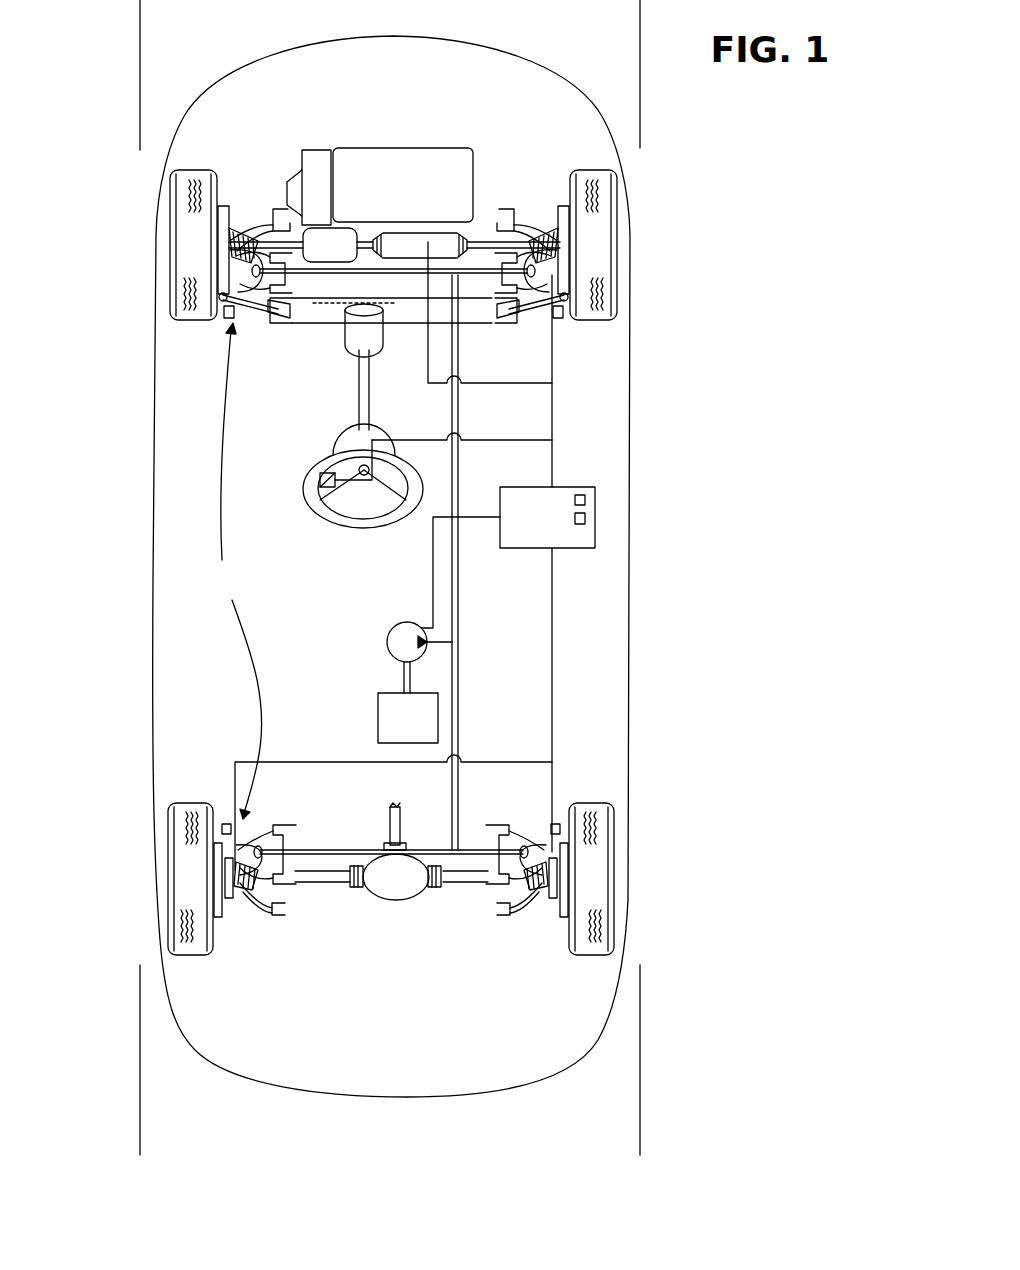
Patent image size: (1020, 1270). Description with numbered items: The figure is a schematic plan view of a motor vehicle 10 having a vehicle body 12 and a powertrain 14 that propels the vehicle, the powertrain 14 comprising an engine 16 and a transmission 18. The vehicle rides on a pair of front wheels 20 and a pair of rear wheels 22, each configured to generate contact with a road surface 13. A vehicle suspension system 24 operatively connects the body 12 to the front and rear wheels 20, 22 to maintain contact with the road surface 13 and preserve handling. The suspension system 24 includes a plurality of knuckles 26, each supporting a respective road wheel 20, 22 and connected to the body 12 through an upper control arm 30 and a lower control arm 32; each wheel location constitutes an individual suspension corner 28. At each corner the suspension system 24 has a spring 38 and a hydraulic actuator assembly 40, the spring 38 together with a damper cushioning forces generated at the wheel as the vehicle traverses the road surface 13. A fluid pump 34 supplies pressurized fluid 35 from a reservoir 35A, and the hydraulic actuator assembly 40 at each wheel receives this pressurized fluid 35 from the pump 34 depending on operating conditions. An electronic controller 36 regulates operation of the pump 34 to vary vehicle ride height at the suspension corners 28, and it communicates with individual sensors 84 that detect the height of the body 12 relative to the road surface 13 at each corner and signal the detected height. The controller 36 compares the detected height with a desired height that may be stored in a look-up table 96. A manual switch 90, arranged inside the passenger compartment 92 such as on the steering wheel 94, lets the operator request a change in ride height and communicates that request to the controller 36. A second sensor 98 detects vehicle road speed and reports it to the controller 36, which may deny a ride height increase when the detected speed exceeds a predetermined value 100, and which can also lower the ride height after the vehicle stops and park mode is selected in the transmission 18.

The motor vehicle 10 is at (441, 566).
The vehicle body 12 is at (626, 568).
The road surface 13 is at (186, 23).
The powertrain 14 is at (394, 163).
The engine 16 is at (403, 180).
The transmission 18 is at (314, 172).
The front wheels 20 is at (172, 228).
The rear wheels 22 is at (170, 900).
The vehicle suspension system 24 is at (237, 571).
The knuckle 26 is at (216, 286).
The suspension corner 28 is at (232, 238).
The upper control arm 30 is at (288, 300).
The lower control arm 32 is at (272, 217).
The fluid pump 34 is at (408, 622).
The pressurized fluid 35 is at (459, 580).
The reservoir 35A is at (386, 729).
The electronic controller 36 is at (536, 528).
The spring 38 is at (232, 252).
The hydraulic actuator assembly 40 is at (231, 226).
The sensor 84 is at (233, 321).
The manual switch 90 is at (322, 500).
The passenger compartment 92 is at (329, 442).
The steering wheel 94 is at (320, 480).
The look-up table 96 is at (586, 519).
The second sensor 98 is at (350, 282).
The predetermined value 100 is at (586, 500).